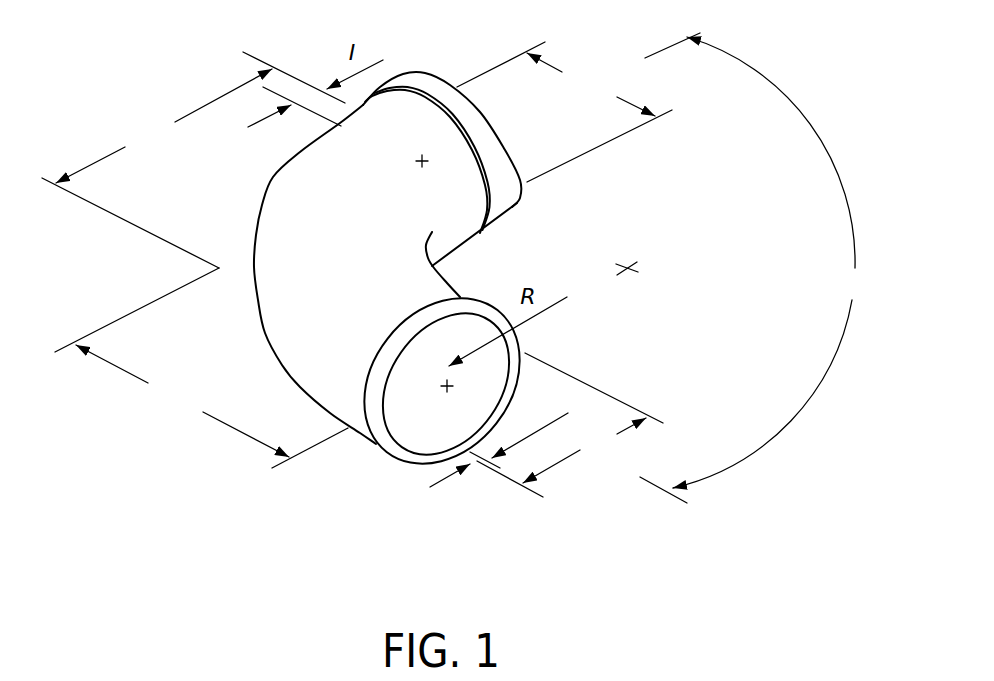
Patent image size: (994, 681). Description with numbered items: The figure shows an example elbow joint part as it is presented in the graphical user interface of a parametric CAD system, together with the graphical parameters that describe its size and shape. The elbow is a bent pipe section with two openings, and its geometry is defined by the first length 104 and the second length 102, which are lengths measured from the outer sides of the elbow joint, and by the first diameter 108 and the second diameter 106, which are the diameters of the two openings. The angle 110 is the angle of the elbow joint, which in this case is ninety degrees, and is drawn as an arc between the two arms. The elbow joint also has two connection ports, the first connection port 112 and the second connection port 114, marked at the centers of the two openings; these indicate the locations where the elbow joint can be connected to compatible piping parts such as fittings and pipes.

The length L2 102 is at (153, 117).
The length L1 104 is at (153, 397).
The diameter D2 106 is at (587, 67).
The diameter D 108 is at (608, 453).
The angle A 110 is at (832, 281).
The connection port P1 112 is at (440, 392).
The connection port P2 114 is at (417, 165).